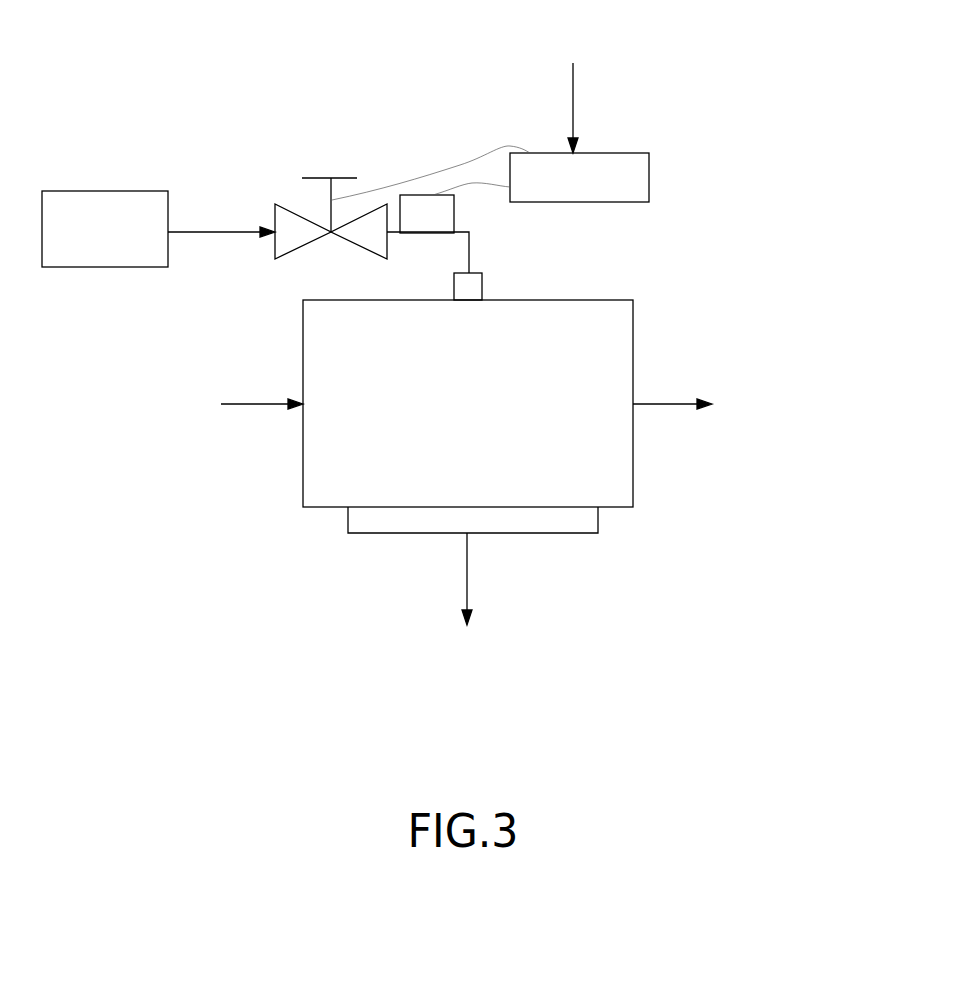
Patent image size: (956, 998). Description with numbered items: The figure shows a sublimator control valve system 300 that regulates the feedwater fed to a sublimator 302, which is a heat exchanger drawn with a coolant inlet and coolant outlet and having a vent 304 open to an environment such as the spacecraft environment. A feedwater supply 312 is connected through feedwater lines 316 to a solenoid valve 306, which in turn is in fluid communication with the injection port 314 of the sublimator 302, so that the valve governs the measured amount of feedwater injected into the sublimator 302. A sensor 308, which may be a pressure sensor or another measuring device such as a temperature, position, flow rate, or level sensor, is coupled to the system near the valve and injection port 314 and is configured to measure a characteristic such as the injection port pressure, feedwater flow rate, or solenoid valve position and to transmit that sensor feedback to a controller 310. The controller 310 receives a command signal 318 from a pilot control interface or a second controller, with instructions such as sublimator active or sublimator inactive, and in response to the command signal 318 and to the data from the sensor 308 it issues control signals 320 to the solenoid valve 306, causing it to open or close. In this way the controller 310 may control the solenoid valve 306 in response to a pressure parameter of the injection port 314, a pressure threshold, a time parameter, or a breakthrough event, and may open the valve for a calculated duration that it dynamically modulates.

The sublimator control valve system 300 is at (771, 41).
The sublimator 302 is at (597, 300).
The vent 304 is at (583, 525).
The solenoid valve 306 is at (316, 178).
The sensor 308 is at (440, 227).
The controller 310 is at (622, 157).
The feedwater supply 312 is at (137, 200).
The injection port 314 is at (472, 286).
The feedwater lines 316 is at (221, 230).
The command signal 318 is at (574, 78).
The control signals 320 is at (460, 158).